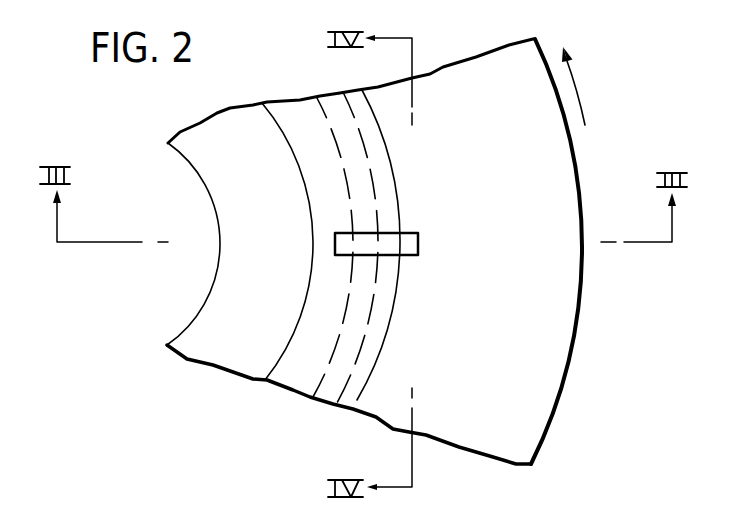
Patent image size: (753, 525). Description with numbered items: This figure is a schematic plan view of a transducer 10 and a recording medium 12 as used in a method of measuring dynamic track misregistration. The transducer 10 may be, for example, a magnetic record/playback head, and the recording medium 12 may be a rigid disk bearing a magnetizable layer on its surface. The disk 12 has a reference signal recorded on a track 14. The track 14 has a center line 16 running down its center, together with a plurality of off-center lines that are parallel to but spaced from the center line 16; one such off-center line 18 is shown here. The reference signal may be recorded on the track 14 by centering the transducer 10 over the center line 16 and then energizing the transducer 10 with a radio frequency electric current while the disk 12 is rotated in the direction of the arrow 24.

The transducer 10 is at (414, 257).
The recording medium 12 is at (551, 372).
The track 14 is at (325, 292).
The center line 16 is at (307, 404).
The off-center line 18 is at (337, 405).
The arrow 24 is at (577, 88).